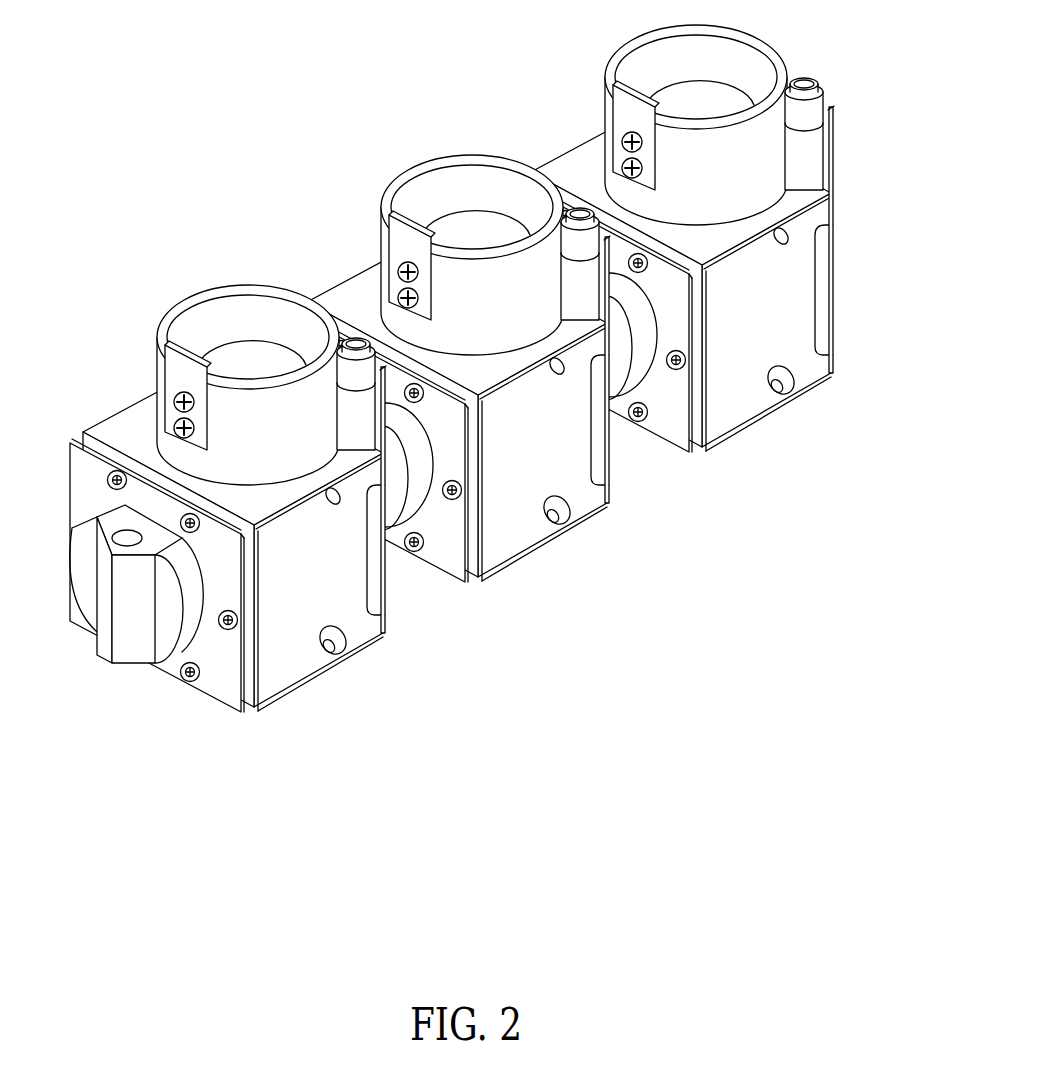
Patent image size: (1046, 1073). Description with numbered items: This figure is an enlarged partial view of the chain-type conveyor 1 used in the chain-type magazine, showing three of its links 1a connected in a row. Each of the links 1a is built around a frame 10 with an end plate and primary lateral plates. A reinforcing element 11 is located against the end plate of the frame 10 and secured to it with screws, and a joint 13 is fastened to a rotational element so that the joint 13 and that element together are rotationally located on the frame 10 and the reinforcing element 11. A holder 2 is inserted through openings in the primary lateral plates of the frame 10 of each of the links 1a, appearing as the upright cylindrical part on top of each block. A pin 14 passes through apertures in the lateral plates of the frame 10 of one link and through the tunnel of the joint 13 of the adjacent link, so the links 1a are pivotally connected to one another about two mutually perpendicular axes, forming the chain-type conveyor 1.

The chain-type conveyor 1 is at (447, 400).
The link 1a is at (335, 465).
The holder 2 is at (220, 314).
The frame 10 is at (122, 425).
The reinforcing element 11 is at (220, 690).
The joint 13 is at (135, 645).
The pin 14 is at (350, 342).